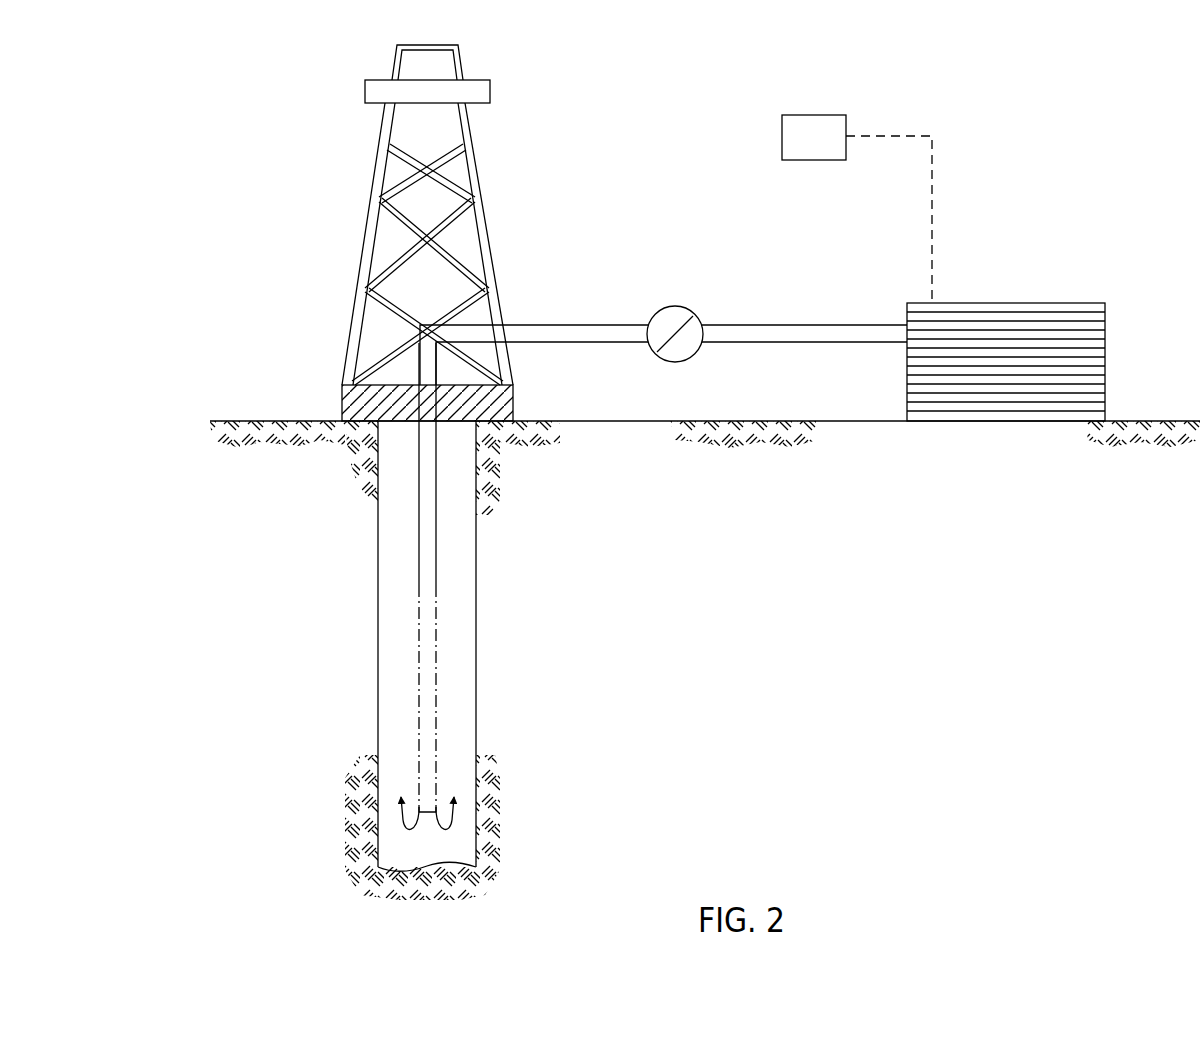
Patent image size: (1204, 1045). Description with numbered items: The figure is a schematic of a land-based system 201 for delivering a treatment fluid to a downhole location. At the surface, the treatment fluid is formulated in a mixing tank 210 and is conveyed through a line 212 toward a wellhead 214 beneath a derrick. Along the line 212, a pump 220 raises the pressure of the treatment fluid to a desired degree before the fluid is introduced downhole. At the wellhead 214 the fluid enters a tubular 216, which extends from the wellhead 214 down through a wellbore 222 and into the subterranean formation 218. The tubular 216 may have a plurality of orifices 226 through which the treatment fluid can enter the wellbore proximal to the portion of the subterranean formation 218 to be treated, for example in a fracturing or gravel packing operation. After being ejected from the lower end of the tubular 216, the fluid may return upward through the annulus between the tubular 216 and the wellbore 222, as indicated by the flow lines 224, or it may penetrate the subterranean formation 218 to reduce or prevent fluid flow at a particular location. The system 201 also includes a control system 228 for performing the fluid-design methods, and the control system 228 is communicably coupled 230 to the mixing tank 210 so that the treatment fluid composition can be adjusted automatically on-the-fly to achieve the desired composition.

The system 201 is at (204, 52).
The mixing tank 210 is at (1077, 306).
The line 212 is at (577, 323).
The wellhead 214 is at (340, 406).
The tubular 216 is at (436, 555).
The subterranean formation 218 is at (303, 652).
The pump 220 is at (686, 307).
The wellbore 222 is at (476, 655).
The flow lines 224 is at (392, 826).
The orifices 226 is at (436, 592).
The control system 228 is at (835, 151).
The communicable coupling 230 is at (932, 166).